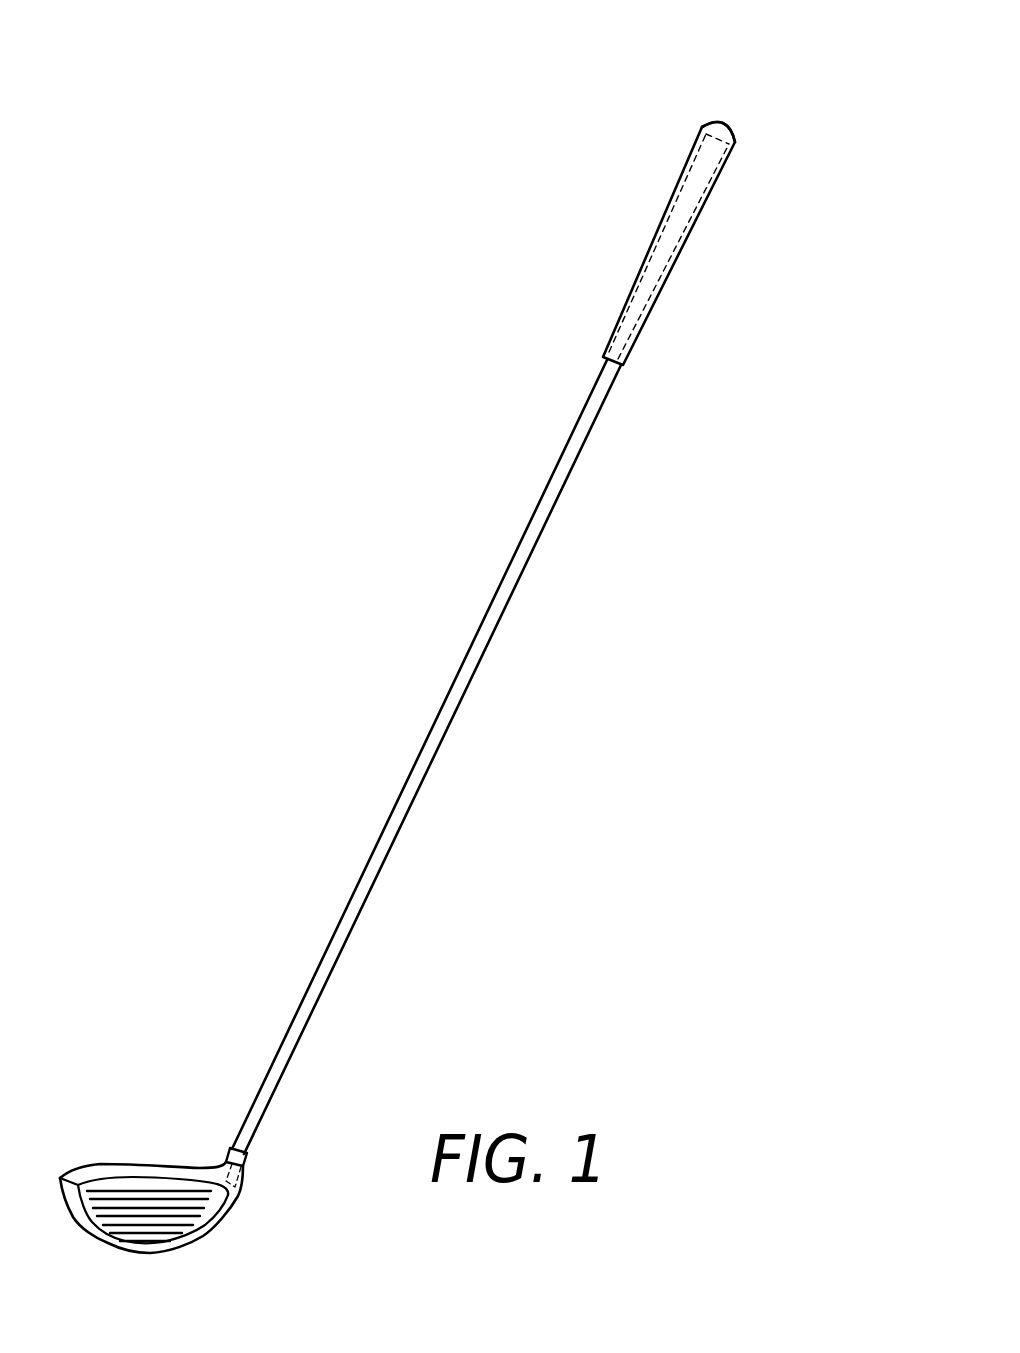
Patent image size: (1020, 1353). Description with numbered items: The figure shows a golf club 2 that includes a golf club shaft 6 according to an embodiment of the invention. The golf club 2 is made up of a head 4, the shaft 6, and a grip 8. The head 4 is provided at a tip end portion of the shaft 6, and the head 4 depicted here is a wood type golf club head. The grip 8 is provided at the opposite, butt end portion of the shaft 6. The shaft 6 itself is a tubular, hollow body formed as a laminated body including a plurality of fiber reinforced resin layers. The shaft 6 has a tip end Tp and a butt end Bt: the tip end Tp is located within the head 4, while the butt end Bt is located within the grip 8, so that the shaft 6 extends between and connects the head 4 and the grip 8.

The golf club 2 is at (590, 84).
The head 4 is at (143, 1177).
The shaft 6 is at (415, 794).
The grip 8 is at (675, 240).
The butt end Bt is at (718, 122).
The tip end Tp is at (235, 1213).